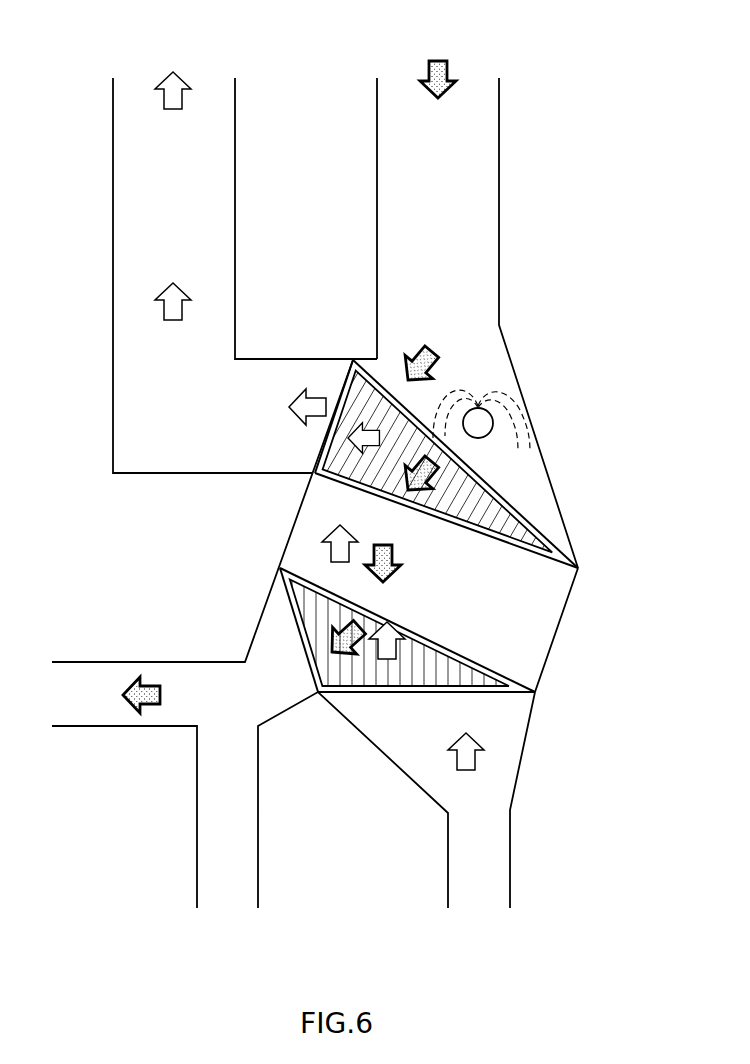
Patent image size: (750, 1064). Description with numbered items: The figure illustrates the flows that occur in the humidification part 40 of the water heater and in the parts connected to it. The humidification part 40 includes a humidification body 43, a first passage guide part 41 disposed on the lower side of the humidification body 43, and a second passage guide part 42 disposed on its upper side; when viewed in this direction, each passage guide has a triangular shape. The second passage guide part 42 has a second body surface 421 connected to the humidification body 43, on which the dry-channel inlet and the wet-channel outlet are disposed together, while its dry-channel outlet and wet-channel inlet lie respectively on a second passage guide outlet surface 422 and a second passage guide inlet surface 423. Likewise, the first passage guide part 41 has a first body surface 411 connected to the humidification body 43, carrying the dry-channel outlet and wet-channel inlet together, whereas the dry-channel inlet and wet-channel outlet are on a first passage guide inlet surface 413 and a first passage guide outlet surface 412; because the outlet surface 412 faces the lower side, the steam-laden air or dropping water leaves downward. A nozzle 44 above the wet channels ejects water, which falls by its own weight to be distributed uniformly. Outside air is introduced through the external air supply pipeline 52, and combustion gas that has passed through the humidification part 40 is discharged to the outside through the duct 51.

The humidification part 40 is at (594, 661).
The first passage guide part 41 is at (407, 677).
The first body surface 411 is at (480, 662).
The first passage guide outlet surface 412 is at (295, 610).
The first passage guide inlet surface 413 is at (397, 692).
The second passage guide part 42 is at (485, 455).
The second body surface 421 is at (533, 562).
The second passage guide outlet surface 422 is at (341, 392).
The second passage guide inlet surface 423 is at (510, 503).
The humidification body 43 is at (550, 613).
The nozzle 44 is at (483, 411).
The duct 51 is at (246, 239).
The external air supply pipeline 52 is at (522, 298).